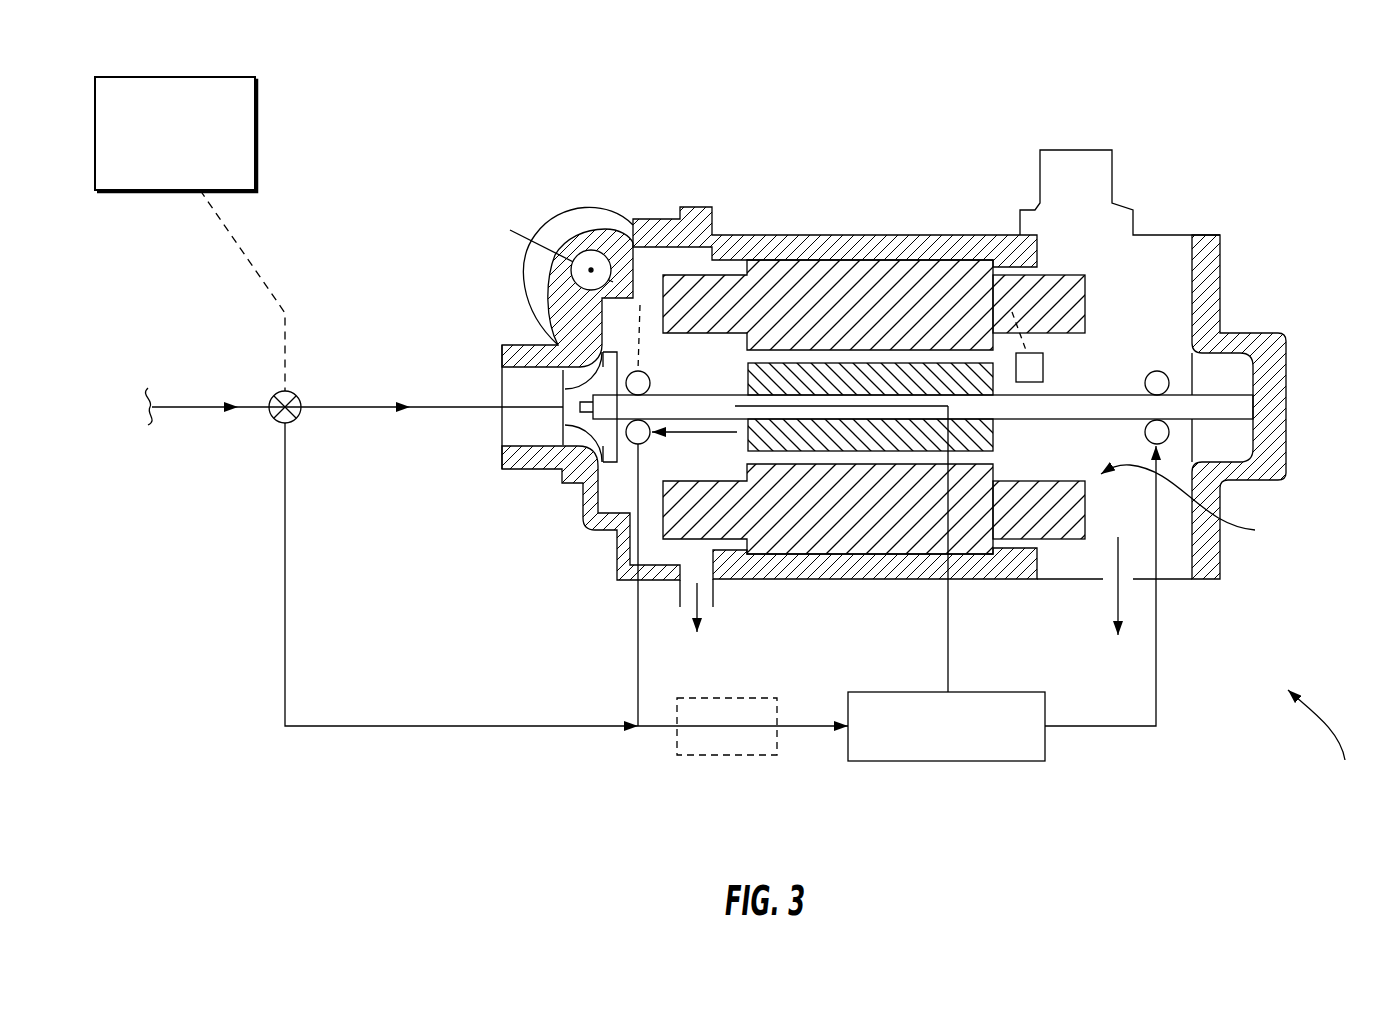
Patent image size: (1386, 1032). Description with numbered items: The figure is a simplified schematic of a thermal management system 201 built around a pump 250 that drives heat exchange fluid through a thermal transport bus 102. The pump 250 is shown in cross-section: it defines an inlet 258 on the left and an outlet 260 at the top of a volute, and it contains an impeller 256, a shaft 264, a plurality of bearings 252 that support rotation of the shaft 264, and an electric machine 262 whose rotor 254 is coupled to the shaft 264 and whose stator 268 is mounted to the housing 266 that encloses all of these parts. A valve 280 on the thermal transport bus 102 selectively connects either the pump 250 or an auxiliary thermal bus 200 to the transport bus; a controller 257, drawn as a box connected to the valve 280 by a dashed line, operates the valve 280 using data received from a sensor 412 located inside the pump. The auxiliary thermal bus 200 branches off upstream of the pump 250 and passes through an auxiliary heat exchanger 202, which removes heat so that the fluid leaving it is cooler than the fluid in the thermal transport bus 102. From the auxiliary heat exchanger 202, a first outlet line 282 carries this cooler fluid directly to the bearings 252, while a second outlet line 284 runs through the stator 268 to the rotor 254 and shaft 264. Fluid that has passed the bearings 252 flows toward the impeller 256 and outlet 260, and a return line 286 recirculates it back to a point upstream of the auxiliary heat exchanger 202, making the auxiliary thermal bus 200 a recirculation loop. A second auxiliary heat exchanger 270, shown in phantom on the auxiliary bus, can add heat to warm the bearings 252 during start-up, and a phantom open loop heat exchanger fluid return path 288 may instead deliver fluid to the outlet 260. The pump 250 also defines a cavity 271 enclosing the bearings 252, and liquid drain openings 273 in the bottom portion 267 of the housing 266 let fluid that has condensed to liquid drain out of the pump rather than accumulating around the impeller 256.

The pump 250 is at (1281, 154).
The controller 257 is at (183, 77).
The valve 280 is at (280, 392).
The thermal transport bus 102 is at (321, 404).
The inlet 258 is at (497, 396).
The outlet 260 is at (590, 250).
The impeller 256 is at (563, 396).
The open loop heat exchanger fluid return path 288 is at (640, 305).
The electric machine 262 is at (735, 252).
The housing 266 is at (985, 235).
The stator 268 is at (784, 285).
The rotor 254 is at (917, 375).
The shaft 264 is at (825, 405).
The sensor 412 is at (1045, 370).
The plurality of bearings 252 is at (650, 383).
The bottom portion 267 is at (1050, 580).
The liquid drain openings 273 is at (713, 606).
The cavity 271 is at (1199, 506).
The return line 286 is at (637, 656).
The second outlet line 284 is at (947, 656).
The first outlet line 282 is at (1157, 668).
The auxiliary thermal bus 200 is at (380, 730).
The second auxiliary heat exchanger 270 is at (710, 757).
The auxiliary heat exchanger 202 is at (905, 762).
The thermal management system 201 is at (1326, 742).